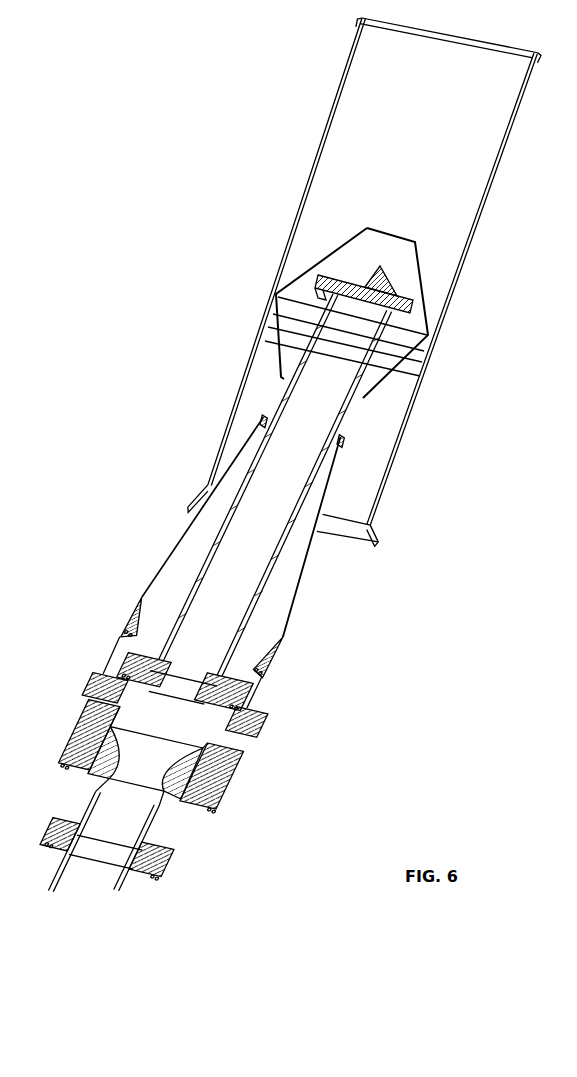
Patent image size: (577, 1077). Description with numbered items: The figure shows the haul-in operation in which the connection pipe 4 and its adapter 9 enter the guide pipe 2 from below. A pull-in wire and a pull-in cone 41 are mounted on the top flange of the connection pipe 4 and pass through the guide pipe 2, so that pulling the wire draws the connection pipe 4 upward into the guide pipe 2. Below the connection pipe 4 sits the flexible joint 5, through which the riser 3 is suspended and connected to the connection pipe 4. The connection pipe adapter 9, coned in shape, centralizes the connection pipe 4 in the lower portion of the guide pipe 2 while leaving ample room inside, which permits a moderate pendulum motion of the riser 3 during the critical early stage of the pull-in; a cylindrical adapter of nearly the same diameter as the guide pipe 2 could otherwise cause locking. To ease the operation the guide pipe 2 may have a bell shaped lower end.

The guide pipe 2 is at (363, 282).
The pull-in cone 41 is at (346, 313).
The connection pipe 4 is at (278, 485).
The connection pipe adapter 9 is at (238, 571).
The flexible joint 5 is at (150, 759).
The riser 3 is at (106, 849).